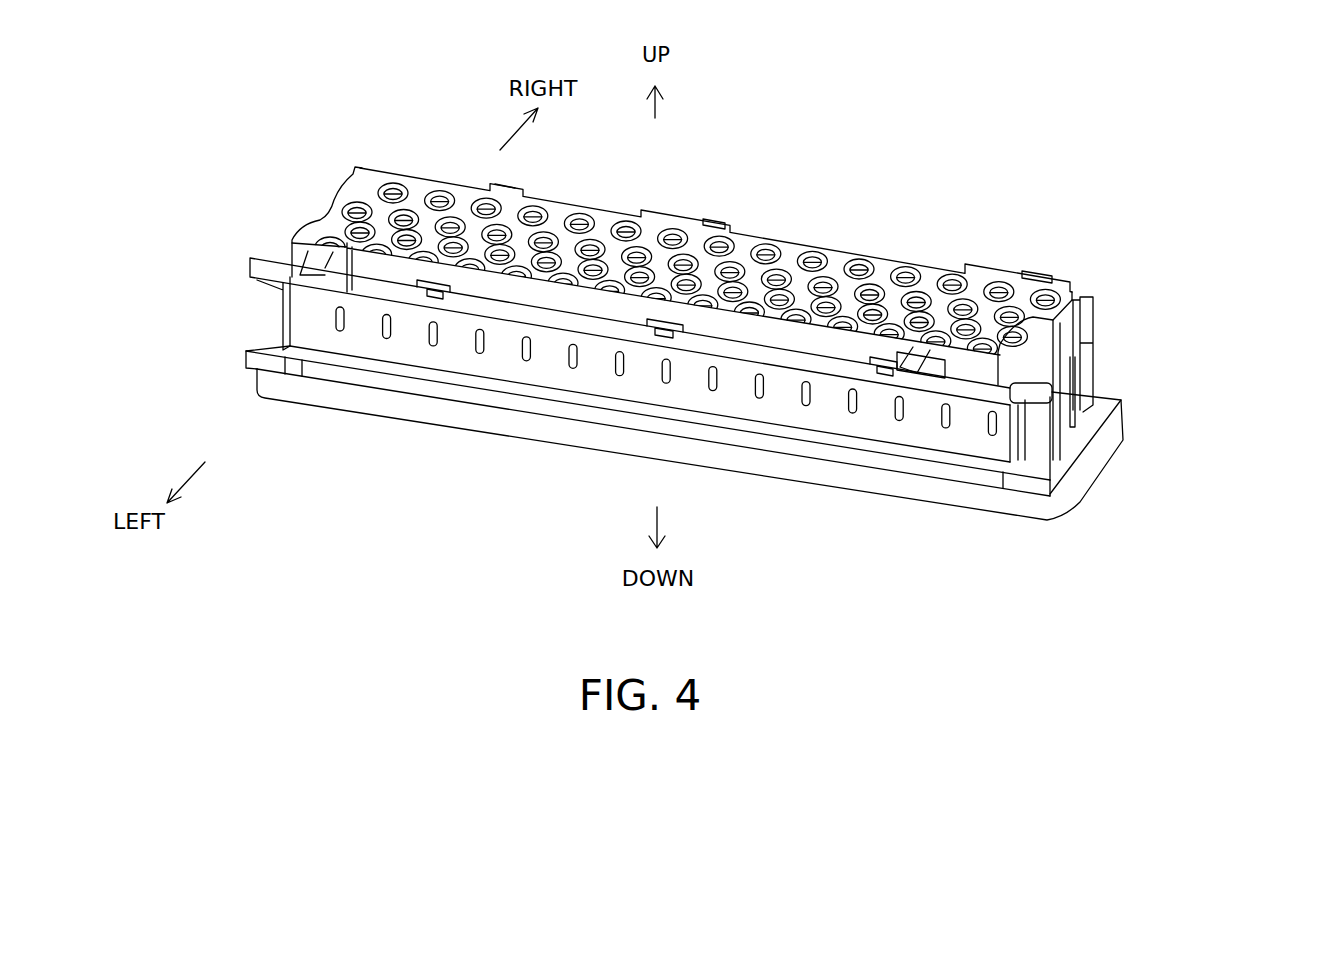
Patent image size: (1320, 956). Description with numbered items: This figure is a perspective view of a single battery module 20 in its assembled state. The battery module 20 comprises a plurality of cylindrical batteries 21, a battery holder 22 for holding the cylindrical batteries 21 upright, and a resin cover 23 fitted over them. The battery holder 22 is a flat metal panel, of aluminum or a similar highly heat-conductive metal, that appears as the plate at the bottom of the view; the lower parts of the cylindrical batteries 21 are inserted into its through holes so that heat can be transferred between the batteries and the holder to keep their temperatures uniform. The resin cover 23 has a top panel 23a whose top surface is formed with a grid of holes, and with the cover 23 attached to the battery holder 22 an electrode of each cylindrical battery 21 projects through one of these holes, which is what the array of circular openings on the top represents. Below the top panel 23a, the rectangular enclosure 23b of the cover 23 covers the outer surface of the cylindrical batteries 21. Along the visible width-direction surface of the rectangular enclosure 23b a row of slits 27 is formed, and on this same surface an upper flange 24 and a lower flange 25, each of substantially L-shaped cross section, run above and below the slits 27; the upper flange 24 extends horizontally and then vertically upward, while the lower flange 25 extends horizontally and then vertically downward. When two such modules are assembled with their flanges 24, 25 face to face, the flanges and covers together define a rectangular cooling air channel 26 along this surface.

The battery module 20 is at (1203, 291).
The cylindrical battery 21 is at (677, 235).
The battery holder 22 is at (1108, 433).
The resin cover 23 is at (988, 263).
The top panel 23a is at (790, 250).
The rectangular enclosure 23b is at (736, 330).
The upper flange 24 is at (247, 272).
The lower flange 25 is at (255, 367).
The cooling air channel 26 is at (297, 336).
The slits 27 is at (380, 323).